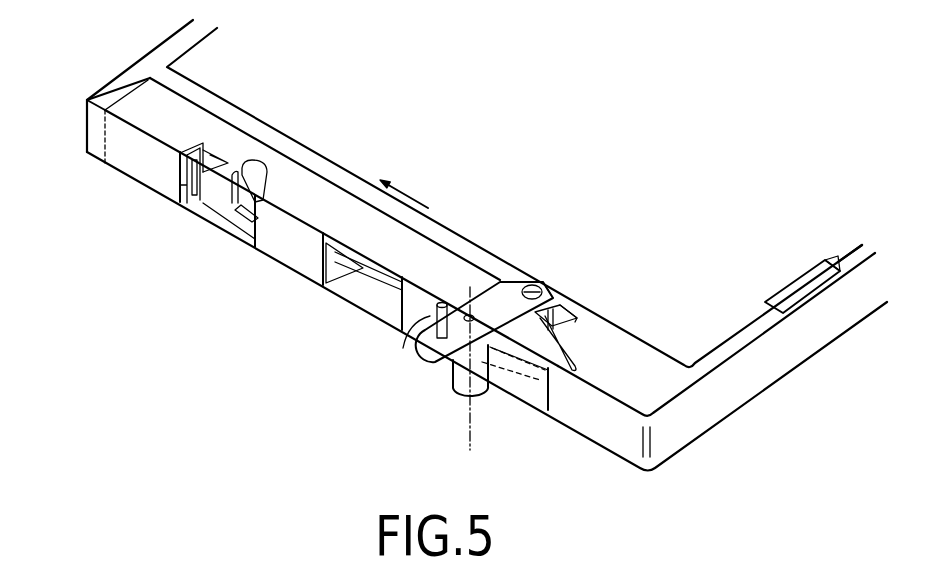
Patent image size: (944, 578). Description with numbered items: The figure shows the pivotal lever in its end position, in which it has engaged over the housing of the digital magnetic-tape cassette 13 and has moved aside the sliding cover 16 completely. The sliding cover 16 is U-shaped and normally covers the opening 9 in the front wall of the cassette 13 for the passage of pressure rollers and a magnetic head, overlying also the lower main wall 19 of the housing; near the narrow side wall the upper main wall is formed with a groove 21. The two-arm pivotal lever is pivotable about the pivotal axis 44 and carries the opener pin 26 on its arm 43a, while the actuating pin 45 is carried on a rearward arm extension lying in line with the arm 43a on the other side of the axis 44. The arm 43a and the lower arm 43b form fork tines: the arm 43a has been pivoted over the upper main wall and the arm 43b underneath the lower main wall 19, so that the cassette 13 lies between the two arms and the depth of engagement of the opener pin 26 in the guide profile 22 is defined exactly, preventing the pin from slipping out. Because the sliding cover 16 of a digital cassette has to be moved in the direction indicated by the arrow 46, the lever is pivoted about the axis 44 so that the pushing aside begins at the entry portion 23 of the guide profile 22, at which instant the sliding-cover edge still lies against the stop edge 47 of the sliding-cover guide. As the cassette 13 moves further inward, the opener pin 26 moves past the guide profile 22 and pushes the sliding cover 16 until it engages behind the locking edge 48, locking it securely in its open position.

The opening 9 is at (225, 222).
The magnetic-tape cassette 13 is at (98, 127).
The sliding cover 16 is at (137, 103).
The lower main wall 19 is at (765, 390).
The groove 21 is at (798, 292).
The guide profile 22 is at (565, 320).
The entry portion 23 is at (571, 368).
The opener pin 26 is at (525, 276).
The arm 43a is at (490, 300).
The lower arm 43b is at (502, 397).
The pivotal axis 44 is at (470, 437).
The actuating pin 45 is at (436, 324).
The arrow 46 is at (402, 194).
The stop edge 47 is at (580, 322).
The locking edge 48 is at (557, 317).